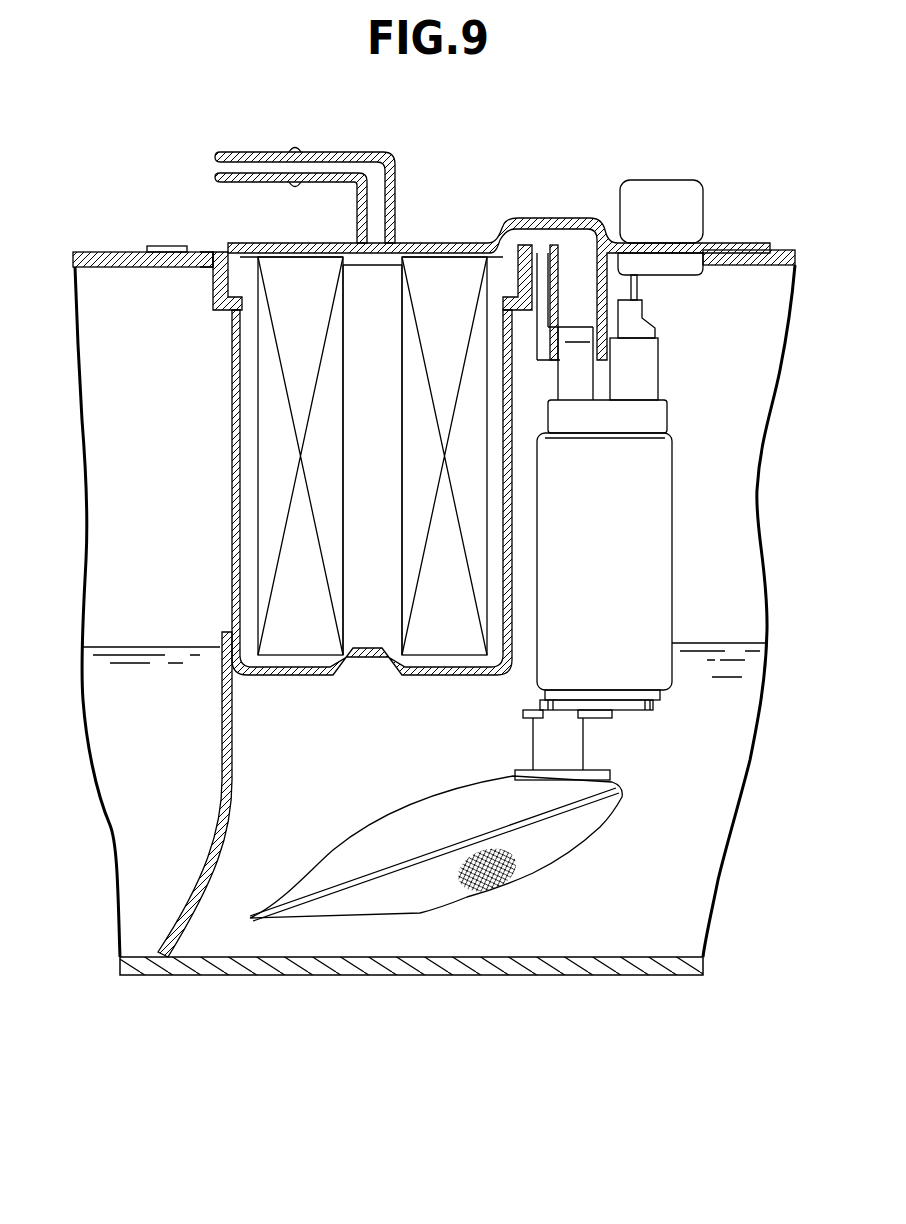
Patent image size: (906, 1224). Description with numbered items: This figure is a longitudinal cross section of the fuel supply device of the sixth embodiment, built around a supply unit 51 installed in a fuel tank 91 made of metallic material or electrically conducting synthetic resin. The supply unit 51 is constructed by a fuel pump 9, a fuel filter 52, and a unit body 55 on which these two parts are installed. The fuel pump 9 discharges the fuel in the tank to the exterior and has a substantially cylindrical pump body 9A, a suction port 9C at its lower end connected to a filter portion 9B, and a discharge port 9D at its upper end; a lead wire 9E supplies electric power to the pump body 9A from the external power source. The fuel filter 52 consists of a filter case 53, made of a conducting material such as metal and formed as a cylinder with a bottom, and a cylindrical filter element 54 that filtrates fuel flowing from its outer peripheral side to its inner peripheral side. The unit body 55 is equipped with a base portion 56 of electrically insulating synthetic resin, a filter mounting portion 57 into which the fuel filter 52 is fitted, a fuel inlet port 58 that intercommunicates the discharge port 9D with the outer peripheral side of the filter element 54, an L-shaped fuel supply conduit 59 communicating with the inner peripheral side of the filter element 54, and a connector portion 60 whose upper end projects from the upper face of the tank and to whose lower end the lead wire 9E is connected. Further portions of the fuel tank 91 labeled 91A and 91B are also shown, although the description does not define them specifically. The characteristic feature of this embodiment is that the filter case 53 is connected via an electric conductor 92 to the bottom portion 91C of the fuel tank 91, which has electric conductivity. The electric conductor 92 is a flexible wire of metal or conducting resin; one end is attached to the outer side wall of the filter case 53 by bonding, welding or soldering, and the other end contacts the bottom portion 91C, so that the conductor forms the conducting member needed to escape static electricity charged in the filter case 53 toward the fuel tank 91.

The fuel pump 9 is at (549, 671).
The pump body 9A is at (650, 626).
The filter portion 9B is at (379, 900).
The suction port 9C is at (572, 747).
The discharge port 9D is at (583, 377).
The lead wire 9E is at (637, 293).
The supply unit 51 is at (392, 379).
The fuel filter 52 is at (230, 405).
The filter case 53 is at (272, 487).
The filter element 54 is at (272, 555).
The unit body 55 is at (428, 240).
The base portion 56 is at (253, 245).
The filter mounting portion 57 is at (213, 278).
The fuel inlet port 58 is at (588, 272).
The fuel supply conduit 59 is at (241, 152).
The connector portion 60 is at (665, 192).
The fuel tank 91 is at (435, 648).
The tank top wall 91A is at (104, 250).
The tank opening edge 91B is at (215, 258).
The bottom portion 91C is at (540, 965).
The electric conductor 92 is at (218, 803).